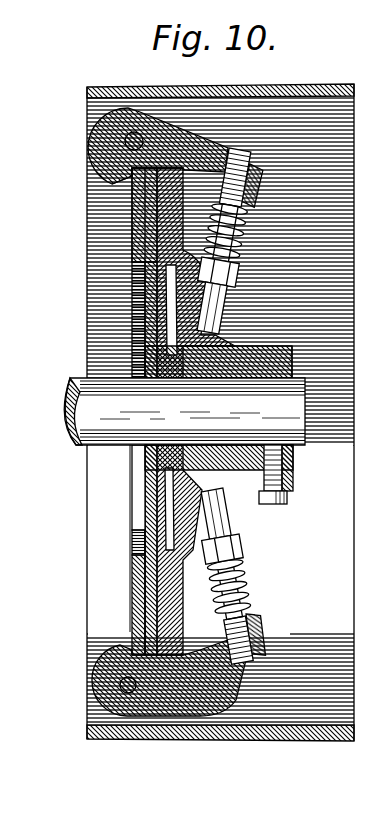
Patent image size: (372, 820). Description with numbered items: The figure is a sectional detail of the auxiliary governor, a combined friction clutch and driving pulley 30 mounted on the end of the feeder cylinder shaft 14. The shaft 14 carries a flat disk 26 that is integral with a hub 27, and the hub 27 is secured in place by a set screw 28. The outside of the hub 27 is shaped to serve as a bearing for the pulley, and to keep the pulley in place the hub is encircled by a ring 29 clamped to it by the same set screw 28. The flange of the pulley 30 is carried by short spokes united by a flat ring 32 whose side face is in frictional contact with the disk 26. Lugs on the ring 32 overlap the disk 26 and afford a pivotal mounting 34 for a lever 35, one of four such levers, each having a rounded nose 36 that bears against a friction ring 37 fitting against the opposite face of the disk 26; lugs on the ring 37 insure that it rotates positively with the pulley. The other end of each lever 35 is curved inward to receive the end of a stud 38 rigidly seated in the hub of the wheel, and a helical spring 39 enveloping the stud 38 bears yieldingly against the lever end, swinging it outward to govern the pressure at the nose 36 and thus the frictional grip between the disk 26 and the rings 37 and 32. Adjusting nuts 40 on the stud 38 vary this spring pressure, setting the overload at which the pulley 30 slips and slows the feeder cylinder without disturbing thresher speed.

The feeder cylinder shaft 14 is at (80, 405).
The flat disk 26 is at (150, 323).
The hub 27 is at (205, 370).
The set screw 28 is at (293, 459).
The ring 29 is at (285, 372).
The driving pulley 30 is at (283, 91).
The flat ring 32 is at (130, 263).
The pivotal mounting 34 is at (110, 162).
The lever 35 is at (128, 142).
The rounded nose 36 is at (130, 178).
The friction ring 37 is at (131, 240).
The stud 38 is at (252, 614).
The helical spring 39 is at (243, 590).
The adjusting nut 40 is at (242, 555).